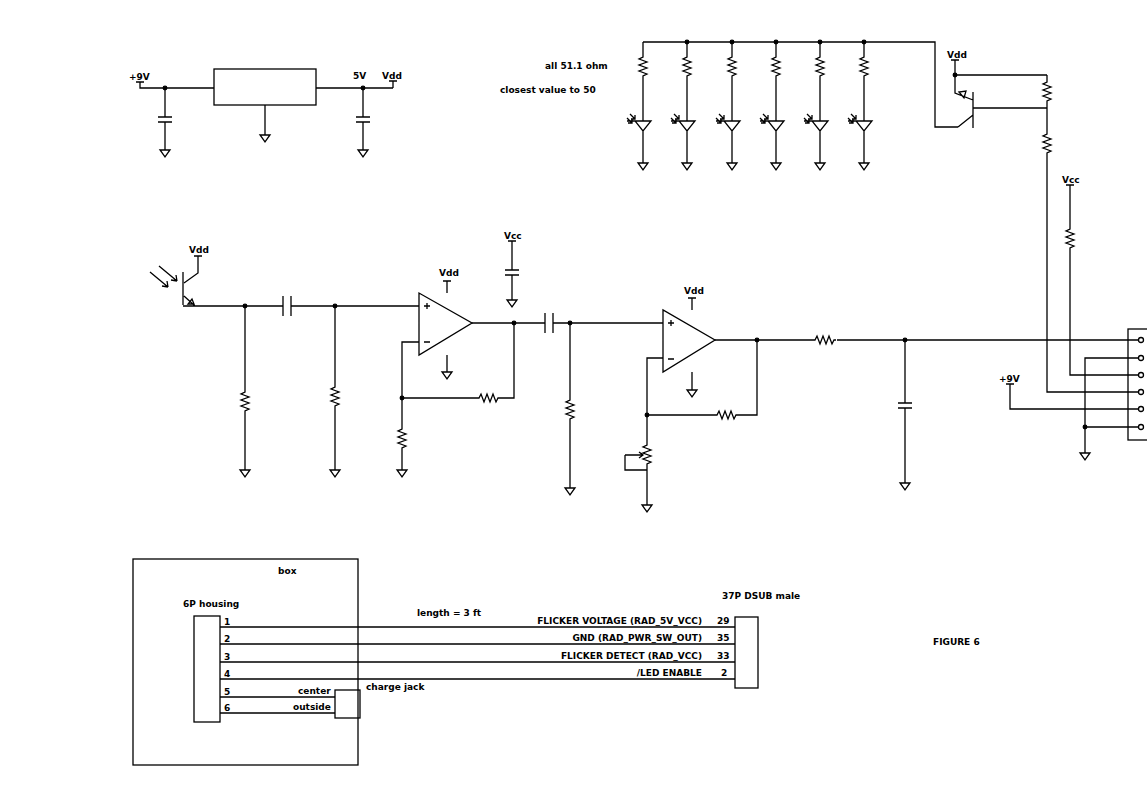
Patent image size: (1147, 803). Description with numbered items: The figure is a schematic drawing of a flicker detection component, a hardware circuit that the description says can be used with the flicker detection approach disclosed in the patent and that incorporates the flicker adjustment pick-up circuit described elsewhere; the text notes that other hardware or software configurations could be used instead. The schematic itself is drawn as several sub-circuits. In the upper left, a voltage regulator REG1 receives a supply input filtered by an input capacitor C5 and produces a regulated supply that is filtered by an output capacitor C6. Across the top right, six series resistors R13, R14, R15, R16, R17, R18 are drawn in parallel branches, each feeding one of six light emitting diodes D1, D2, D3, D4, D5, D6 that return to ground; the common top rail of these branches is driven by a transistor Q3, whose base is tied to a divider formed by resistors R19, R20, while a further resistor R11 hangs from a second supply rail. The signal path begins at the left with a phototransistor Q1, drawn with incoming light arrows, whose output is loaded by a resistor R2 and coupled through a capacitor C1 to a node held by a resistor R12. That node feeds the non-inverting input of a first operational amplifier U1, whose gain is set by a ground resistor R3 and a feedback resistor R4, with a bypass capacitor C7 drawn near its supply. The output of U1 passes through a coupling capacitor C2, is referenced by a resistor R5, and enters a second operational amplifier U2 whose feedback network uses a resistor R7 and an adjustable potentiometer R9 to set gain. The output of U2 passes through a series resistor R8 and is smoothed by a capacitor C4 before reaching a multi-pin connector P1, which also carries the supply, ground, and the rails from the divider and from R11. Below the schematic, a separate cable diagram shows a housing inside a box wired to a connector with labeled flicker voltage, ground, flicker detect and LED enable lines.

The LM340 voltage regulator REG1 is at (265, 100).
The input capacitor .22uF C5 is at (177, 122).
The output capacitor .1uF C6 is at (372, 122).
The LED resistor 51.1 ohm R13 is at (653, 81).
The LED resistor 51.1 ohm R14 is at (697, 81).
The LED resistor 51.1 ohm R15 is at (742, 81).
The LED resistor 51.1 ohm R16 is at (786, 81).
The LED resistor 51.1 ohm R17 is at (830, 81).
The LED resistor 51.1 ohm R18 is at (874, 81).
The LED D1 is at (639, 142).
The LED D2 is at (683, 142).
The LED D3 is at (728, 142).
The LED D4 is at (772, 142).
The LED D5 is at (816, 142).
The LED D6 is at (860, 142).
The 2N2907A PNP transistor Q3 is at (1001, 101).
The resistor 100K R19 is at (1061, 91).
The resistor 100 R20 is at (1090, 250).
The resistor 100 R11 is at (1102, 280).
The SFH3410 phototransistor Q1 is at (233, 289).
The resistor 5.6K R2 is at (257, 391).
The coupling capacitor .1uF C1 is at (346, 307).
The resistor 100K R12 is at (348, 391).
The OPA340 operational amplifier U1 is at (445, 330).
The resistor 100K R3 is at (415, 451).
The feedback resistor 1M R4 is at (458, 368).
The supply bypass capacitor .1uF C7 is at (521, 274).
The coupling capacitor .1uF C2 is at (598, 321).
The resistor 100K R5 is at (583, 409).
The OPA340 operational amplifier U2 is at (688, 347).
The feedback resistor 1M R7 is at (702, 385).
The potentiometer 20K R9 is at (649, 463).
The output resistor 100K R8 is at (825, 341).
The output filter capacitor 1uF C4 is at (913, 415).
The connector P1 is at (1137, 379).